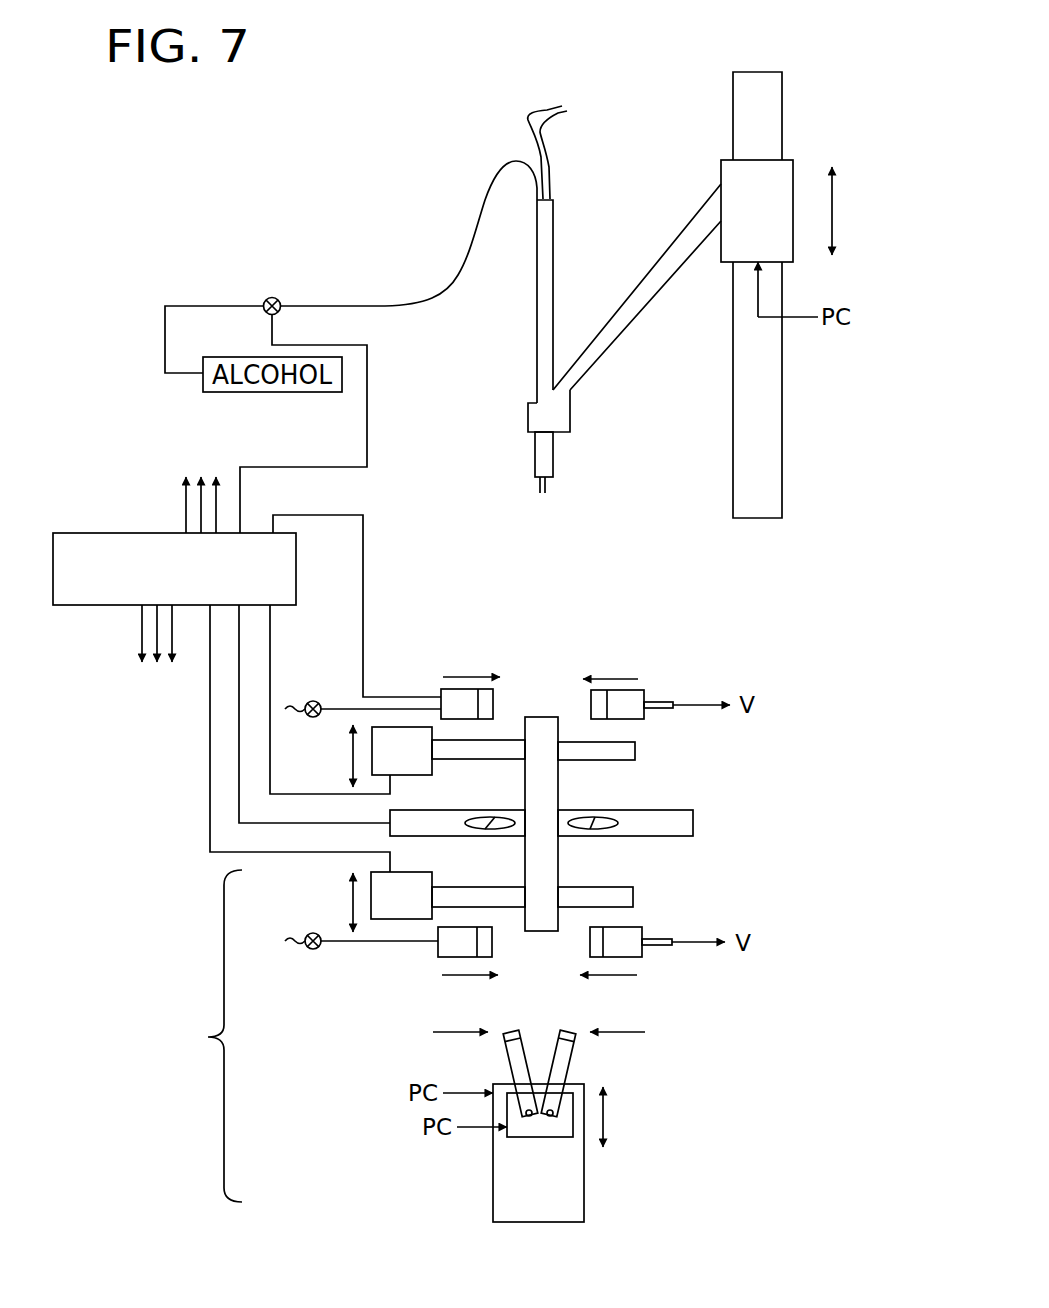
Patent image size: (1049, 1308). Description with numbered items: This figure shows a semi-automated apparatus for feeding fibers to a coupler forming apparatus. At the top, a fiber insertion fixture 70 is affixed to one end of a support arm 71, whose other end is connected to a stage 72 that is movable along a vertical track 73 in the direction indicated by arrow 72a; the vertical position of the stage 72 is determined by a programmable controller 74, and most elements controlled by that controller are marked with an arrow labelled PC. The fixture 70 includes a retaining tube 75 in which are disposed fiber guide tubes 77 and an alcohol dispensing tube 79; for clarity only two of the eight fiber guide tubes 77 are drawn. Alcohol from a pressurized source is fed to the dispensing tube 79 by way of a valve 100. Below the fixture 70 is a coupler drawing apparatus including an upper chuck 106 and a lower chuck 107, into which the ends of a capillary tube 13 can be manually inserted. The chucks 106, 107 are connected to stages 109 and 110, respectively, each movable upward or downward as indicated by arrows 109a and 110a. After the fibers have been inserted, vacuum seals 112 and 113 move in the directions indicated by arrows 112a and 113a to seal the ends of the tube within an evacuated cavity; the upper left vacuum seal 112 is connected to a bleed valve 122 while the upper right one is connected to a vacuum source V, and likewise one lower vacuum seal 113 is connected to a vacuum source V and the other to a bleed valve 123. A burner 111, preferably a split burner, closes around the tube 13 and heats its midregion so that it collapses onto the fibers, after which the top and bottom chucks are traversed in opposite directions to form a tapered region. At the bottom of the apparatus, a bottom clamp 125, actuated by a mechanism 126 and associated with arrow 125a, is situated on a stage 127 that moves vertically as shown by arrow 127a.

The capillary tube 13 is at (559, 783).
The fiber insertion fixture 70 is at (535, 449).
The support arm 71 is at (552, 412).
The stage 72 is at (731, 172).
The arrow 72a is at (836, 212).
The track 73 is at (735, 88).
The programmable controller 74 is at (108, 533).
The retaining tube 75 is at (538, 318).
The fiber guide tubes 77 is at (517, 494).
The alcohol dispensing tube 79 is at (445, 301).
The valve 100 is at (272, 297).
The chuck 106 is at (620, 753).
The chuck 107 is at (585, 887).
The stage 109 is at (418, 767).
The arrow 109a is at (350, 752).
The stage 110 is at (407, 885).
The arrow 110a is at (352, 903).
The burner 111 is at (672, 823).
The vacuum seals 112 is at (445, 689).
The arrow 112a is at (462, 677).
The vacuum seals 113 is at (450, 954).
The arrow 113a is at (622, 975).
The bleed valve 122 is at (313, 701).
The bleed valve 123 is at (315, 950).
The bottom clamp 125 is at (518, 1072).
The arrow 125a is at (457, 1027).
The mechanism 126 is at (570, 1130).
The stage 127 is at (510, 1203).
The arrow 127a is at (607, 1115).